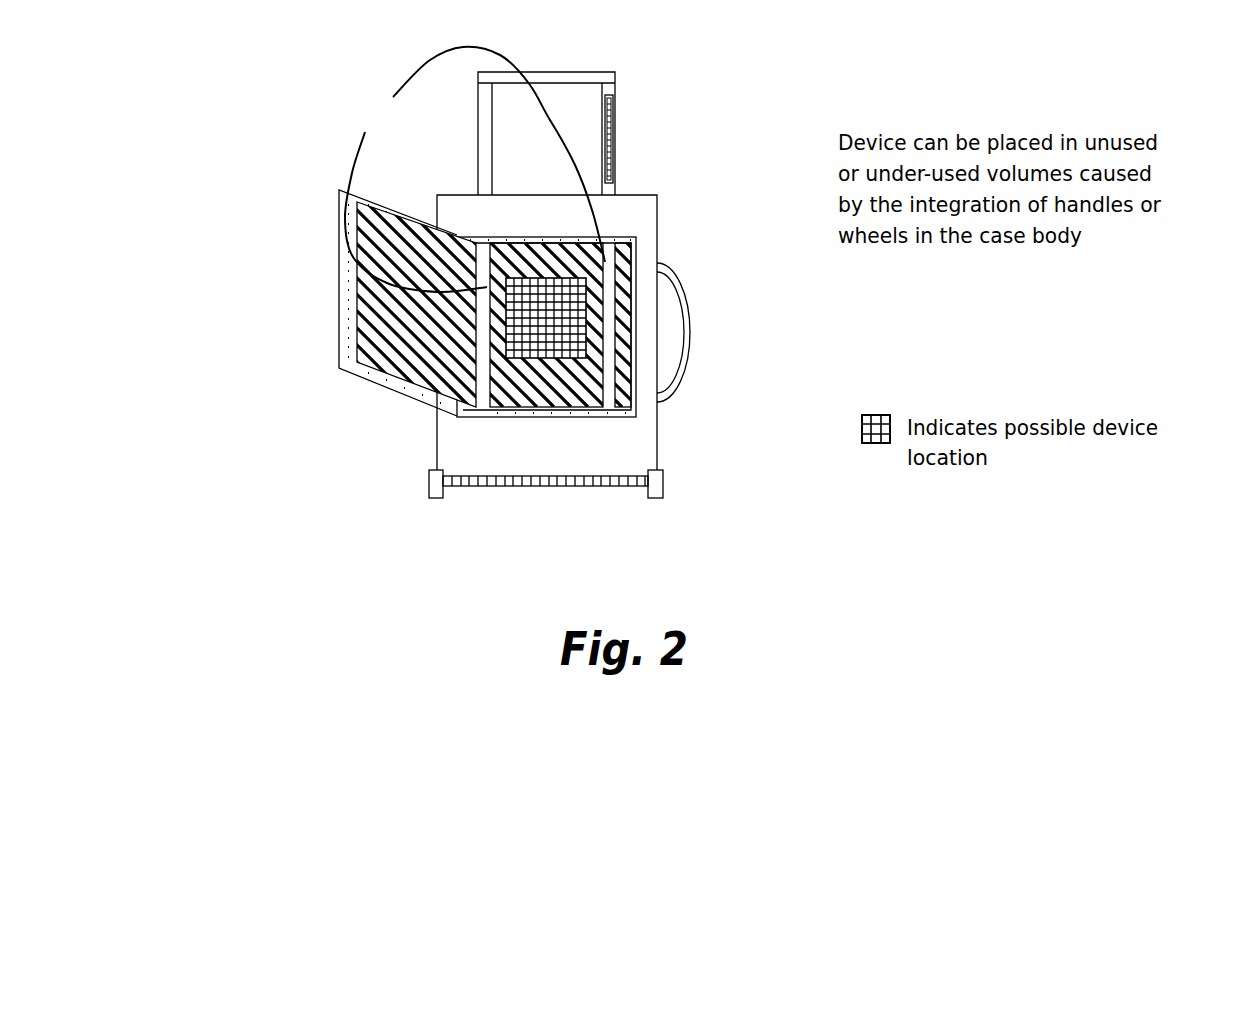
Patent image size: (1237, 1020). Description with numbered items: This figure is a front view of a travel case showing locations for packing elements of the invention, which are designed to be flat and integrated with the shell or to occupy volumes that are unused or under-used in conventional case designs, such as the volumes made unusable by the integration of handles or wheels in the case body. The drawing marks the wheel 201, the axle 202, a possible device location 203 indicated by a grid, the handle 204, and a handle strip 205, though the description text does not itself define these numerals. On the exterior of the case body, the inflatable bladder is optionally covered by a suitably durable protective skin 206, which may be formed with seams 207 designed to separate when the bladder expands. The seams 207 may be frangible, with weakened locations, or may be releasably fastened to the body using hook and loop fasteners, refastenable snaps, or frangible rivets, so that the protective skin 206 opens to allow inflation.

The wheel 201 is at (436, 498).
The axle 202 is at (598, 486).
The device location grid 203 is at (568, 340).
The handle 204 is at (482, 143).
The handle strip 205 is at (615, 160).
The protective skin 206 is at (407, 327).
The seams 207 is at (377, 378).